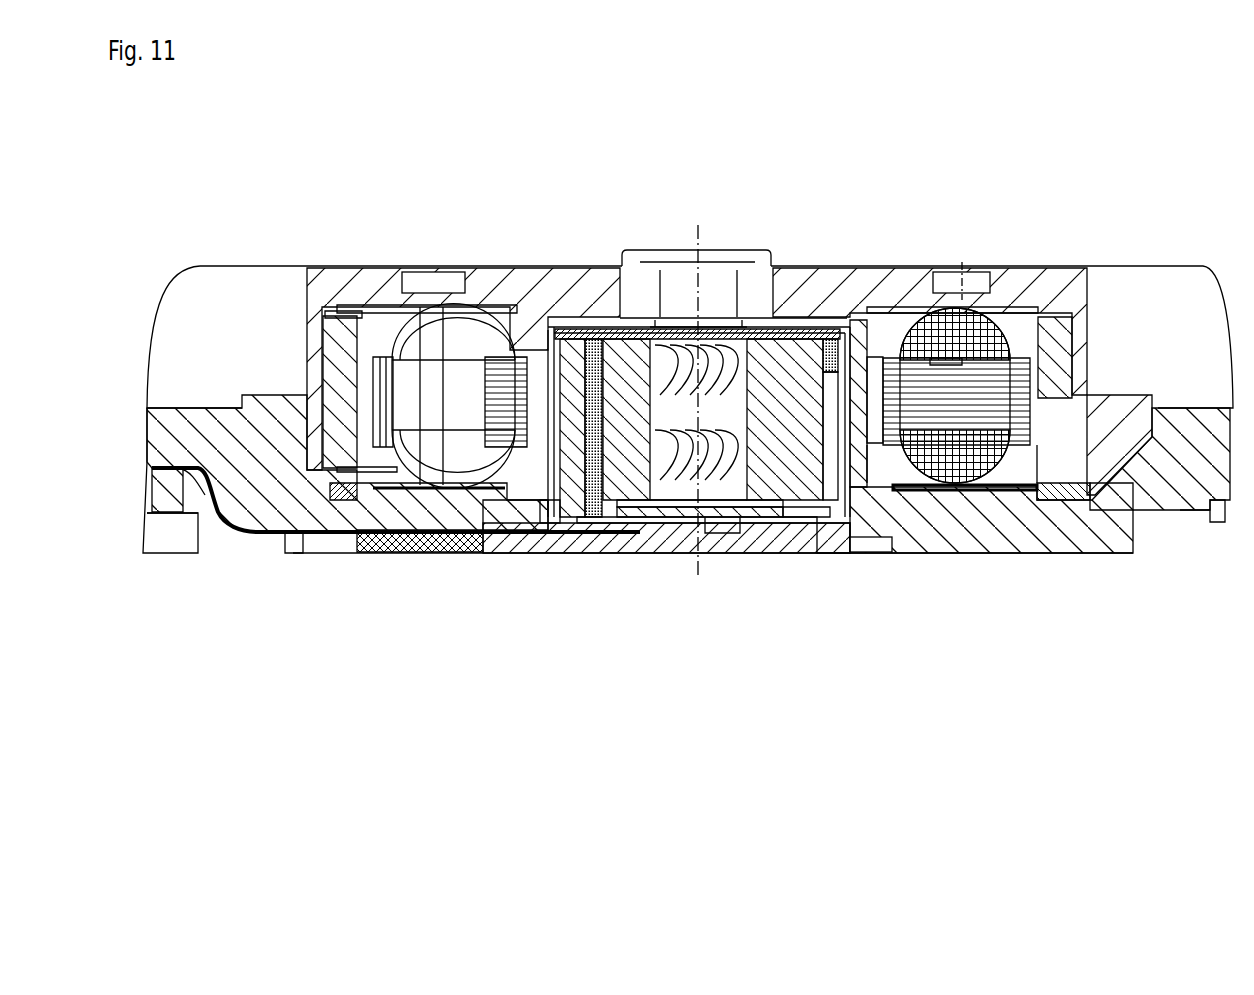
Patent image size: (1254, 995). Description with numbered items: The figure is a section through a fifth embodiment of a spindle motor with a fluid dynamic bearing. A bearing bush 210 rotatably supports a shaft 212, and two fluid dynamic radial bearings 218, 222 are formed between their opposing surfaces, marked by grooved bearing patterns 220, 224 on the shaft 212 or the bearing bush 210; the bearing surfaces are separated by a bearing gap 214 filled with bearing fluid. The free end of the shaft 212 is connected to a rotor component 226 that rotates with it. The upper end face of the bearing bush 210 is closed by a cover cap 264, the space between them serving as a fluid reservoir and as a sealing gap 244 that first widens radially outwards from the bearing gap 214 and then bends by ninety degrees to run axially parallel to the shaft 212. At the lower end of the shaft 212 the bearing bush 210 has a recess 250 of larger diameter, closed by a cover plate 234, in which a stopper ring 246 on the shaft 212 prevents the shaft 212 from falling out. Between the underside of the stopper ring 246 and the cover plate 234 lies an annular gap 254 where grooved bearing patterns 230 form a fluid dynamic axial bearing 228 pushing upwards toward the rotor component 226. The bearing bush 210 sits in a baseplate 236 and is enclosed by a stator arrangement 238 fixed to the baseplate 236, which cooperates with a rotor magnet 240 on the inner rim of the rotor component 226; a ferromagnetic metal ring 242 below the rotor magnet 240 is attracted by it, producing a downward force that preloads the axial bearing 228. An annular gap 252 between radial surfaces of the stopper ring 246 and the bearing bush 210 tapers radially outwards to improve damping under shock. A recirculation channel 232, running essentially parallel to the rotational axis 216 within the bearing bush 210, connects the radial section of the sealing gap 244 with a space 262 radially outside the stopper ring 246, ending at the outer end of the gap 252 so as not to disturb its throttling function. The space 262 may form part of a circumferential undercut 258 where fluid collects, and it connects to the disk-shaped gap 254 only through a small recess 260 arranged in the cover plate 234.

The bearing bush 210 is at (423, 557).
The shaft 212 is at (698, 553).
The bearing gap 214 is at (777, 350).
The rotational axis 216 is at (697, 233).
The fluid dynamic radial bearing 218 is at (580, 345).
The grooved bearing patterns 220 is at (670, 355).
The fluid dynamic radial bearing 222 is at (720, 545).
The grooved bearing patterns 224 is at (653, 553).
The rotor component 226 is at (535, 355).
The fluid dynamic axial bearing 228 is at (750, 550).
The grooved bearing patterns 230 is at (615, 545).
The recirculation channel 232 is at (600, 340).
The cover plate 234 is at (565, 558).
The baseplate 236 is at (293, 533).
The stator arrangement 238 is at (1037, 553).
The rotor magnet 240 is at (330, 455).
The ferromagnetic metal ring 242 is at (1133, 560).
The sealing gap 244 is at (850, 365).
The stopper ring 246 is at (793, 550).
The recess 250 is at (945, 550).
The annular gap 252 is at (437, 557).
The annular gap 254 is at (722, 548).
The circumferential undercut 258 is at (850, 552).
The recess 260 is at (505, 545).
The space 262 is at (470, 553).
The cover cap 264 is at (478, 350).